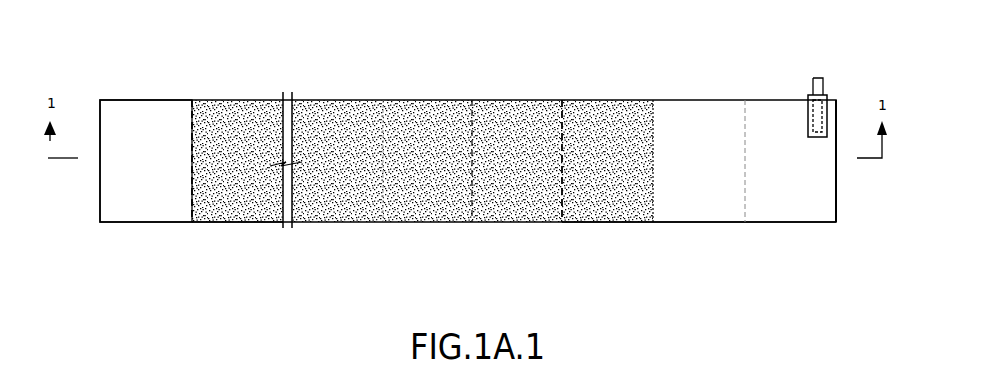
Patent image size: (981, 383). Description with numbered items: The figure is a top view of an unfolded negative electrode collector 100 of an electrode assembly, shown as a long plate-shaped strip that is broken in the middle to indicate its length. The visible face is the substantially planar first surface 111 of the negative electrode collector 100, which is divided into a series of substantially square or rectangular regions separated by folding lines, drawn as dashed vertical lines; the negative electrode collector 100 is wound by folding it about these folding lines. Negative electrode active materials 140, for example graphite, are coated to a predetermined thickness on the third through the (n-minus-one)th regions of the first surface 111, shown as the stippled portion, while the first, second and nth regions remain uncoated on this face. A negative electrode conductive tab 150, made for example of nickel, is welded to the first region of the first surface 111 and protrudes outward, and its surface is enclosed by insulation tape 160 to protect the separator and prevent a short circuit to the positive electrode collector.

The negative electrode collector 100 is at (836, 208).
The first surface 111 is at (822, 182).
The negative electrode active materials 140 is at (497, 110).
The negative electrode conductive tab 150 is at (820, 77).
The insulation tape 160 is at (824, 118).